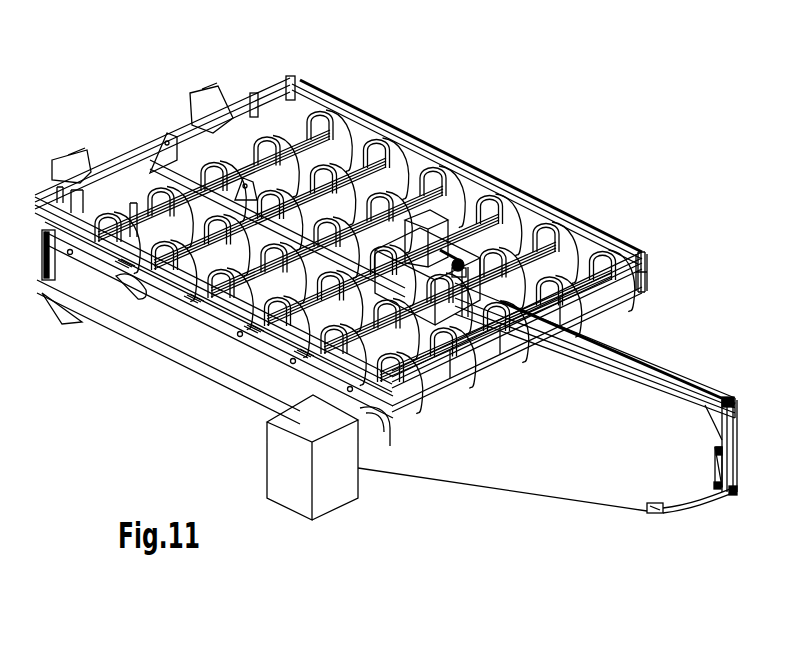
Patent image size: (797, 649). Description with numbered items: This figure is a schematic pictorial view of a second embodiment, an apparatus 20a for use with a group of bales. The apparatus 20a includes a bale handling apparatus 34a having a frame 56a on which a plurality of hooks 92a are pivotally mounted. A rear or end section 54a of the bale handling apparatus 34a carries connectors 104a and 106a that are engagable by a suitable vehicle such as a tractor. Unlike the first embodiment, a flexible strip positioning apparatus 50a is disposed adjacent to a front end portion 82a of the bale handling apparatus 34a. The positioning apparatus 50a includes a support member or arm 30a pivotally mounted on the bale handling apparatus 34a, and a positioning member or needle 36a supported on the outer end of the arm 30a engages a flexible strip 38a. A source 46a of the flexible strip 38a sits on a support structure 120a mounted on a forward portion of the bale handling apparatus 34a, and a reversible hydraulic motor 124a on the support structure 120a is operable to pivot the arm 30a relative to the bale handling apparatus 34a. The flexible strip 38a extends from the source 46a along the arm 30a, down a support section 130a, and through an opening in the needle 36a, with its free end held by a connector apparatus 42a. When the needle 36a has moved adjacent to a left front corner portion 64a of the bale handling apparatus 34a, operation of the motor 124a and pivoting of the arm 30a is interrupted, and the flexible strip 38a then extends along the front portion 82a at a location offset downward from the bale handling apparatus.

The apparatus 20a is at (480, 95).
The bale handling apparatus 34a is at (496, 147).
The source of the flexible strip 46a is at (430, 217).
The rear or end section 54a is at (133, 177).
The frame 56a is at (227, 336).
The left front corner portion 64a is at (645, 280).
The front end portion 82a is at (613, 308).
The hooks 92a is at (373, 145).
The connector 104a is at (207, 103).
The connector 106a is at (77, 167).
The support structure 120a is at (422, 303).
The reversible hydraulic motor 124a is at (467, 290).
The support member or arm 30a is at (580, 353).
The flexible strip 38a is at (708, 393).
The connector apparatus 42a is at (337, 488).
The flexible strip positioning apparatus 50a is at (740, 520).
The support section 130a is at (717, 450).
The positioning member or needle 36a is at (657, 503).